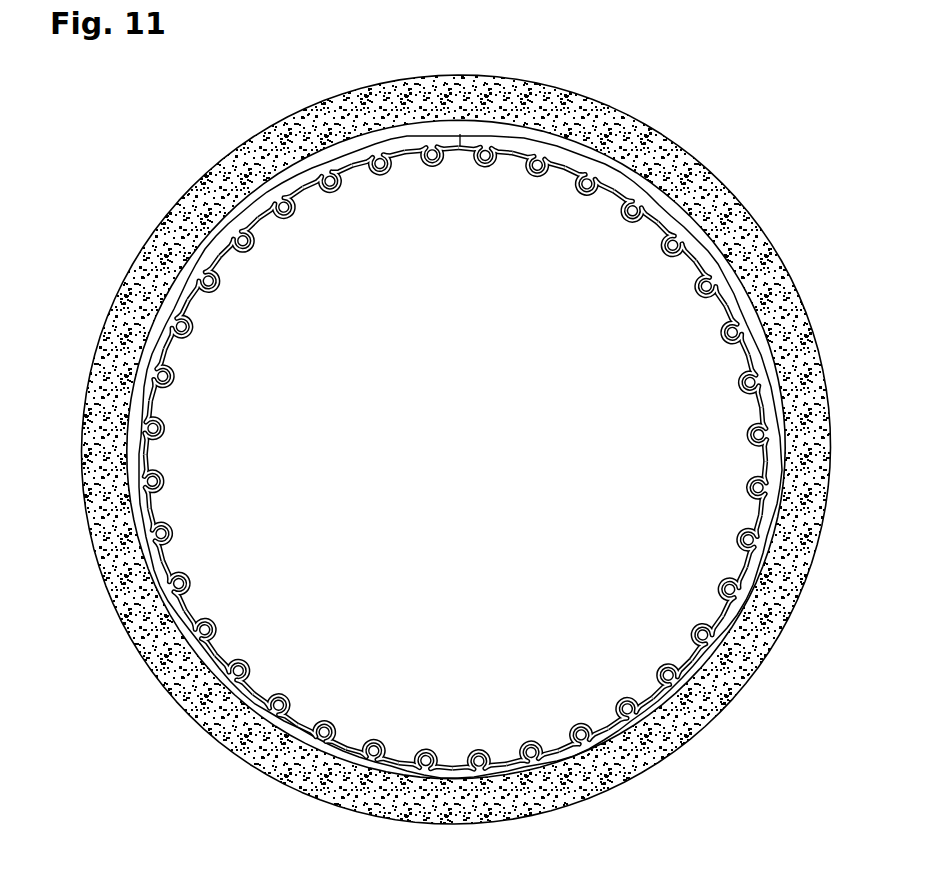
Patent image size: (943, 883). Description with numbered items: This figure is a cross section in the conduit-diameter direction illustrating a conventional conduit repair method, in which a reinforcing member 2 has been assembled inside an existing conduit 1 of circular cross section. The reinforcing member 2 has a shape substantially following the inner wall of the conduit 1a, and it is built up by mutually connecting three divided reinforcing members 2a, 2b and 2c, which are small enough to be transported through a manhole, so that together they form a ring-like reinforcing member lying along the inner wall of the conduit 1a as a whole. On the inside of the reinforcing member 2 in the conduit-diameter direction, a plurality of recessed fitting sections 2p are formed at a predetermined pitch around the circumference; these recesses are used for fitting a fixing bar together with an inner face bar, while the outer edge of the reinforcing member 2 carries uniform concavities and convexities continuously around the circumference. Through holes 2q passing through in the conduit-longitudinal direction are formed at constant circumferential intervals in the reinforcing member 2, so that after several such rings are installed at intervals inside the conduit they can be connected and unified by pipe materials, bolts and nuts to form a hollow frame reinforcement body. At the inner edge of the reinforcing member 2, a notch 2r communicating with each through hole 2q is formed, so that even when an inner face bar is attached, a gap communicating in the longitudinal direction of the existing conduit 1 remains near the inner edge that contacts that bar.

The existing conduit 1 is at (668, 150).
The inner wall of the conduit 1a is at (598, 158).
The reinforcing member 2 is at (456, 458).
The divided reinforcing member 2a is at (727, 313).
The divided reinforcing member 2b is at (290, 728).
The divided reinforcing member 2c is at (183, 312).
The fitting section 2p is at (653, 224).
The through hole 2q is at (296, 214).
The notch 2r is at (163, 481).